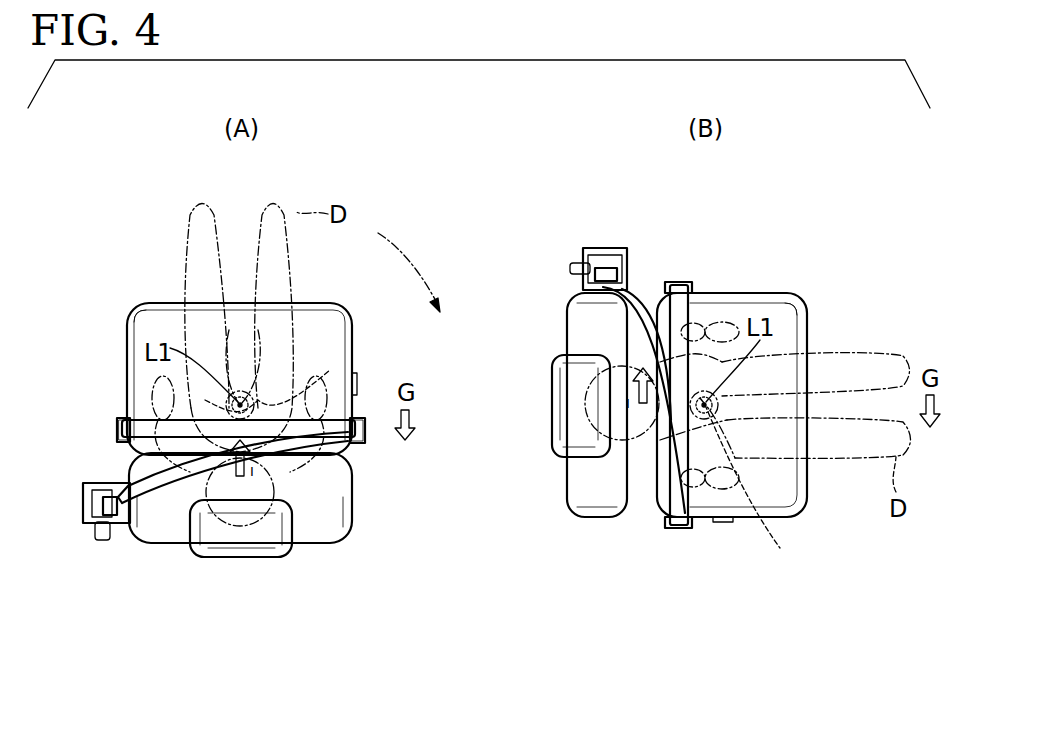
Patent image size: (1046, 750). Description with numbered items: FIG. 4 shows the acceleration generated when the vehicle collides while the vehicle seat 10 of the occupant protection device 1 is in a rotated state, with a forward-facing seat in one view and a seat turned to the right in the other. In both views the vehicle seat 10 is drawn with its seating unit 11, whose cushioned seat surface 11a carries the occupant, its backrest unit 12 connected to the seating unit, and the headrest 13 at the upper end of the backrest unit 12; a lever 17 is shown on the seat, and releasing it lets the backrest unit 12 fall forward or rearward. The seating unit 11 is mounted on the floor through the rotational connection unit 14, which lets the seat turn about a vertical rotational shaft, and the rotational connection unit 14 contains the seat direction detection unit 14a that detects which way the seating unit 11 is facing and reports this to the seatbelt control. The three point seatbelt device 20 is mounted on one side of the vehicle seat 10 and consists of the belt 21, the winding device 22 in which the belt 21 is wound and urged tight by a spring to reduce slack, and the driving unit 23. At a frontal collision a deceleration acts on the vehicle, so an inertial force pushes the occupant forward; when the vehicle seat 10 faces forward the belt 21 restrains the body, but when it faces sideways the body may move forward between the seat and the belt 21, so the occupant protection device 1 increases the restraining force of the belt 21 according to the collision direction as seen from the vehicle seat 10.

The occupant protection device 1 is at (230, 632).
The vehicle seat 10 is at (176, 555).
The seating unit 11 is at (127, 342).
The seat surface 11a is at (155, 312).
The backrest unit 12 is at (316, 546).
The headrest 13 is at (240, 558).
The rotational connection unit 14 is at (248, 392).
The seat direction detection unit 14a is at (252, 395).
The lever 17 is at (356, 384).
The seatbelt device 20 is at (74, 494).
The belt 21 is at (145, 430).
The winding device 22 is at (100, 504).
The driving unit 23 is at (103, 542).